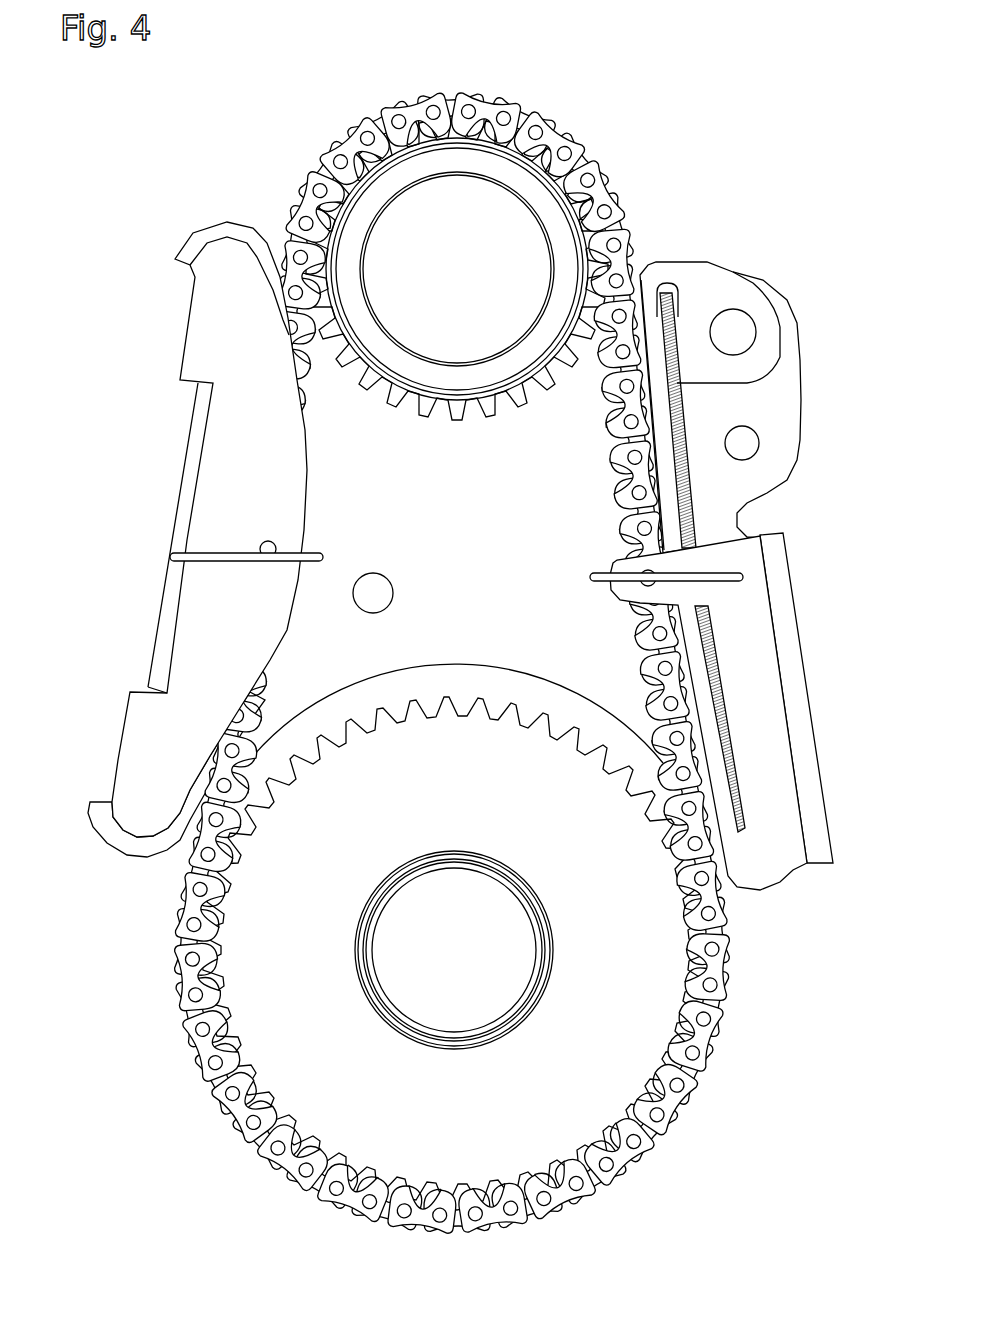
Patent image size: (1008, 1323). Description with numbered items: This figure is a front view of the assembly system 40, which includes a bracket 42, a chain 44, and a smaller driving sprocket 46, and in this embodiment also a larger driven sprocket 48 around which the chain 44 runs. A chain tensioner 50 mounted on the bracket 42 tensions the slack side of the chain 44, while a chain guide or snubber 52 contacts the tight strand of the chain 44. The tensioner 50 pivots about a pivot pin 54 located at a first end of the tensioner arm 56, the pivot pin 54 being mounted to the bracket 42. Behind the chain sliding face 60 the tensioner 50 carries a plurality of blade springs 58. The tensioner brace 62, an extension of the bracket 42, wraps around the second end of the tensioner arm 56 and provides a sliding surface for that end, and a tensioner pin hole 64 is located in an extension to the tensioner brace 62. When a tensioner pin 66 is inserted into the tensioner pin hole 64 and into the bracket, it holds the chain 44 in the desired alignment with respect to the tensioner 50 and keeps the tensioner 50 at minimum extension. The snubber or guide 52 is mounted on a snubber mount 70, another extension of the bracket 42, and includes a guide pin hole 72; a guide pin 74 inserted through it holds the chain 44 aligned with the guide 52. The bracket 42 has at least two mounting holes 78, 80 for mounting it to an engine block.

The assembly system 40 is at (690, 99).
The bracket 42 is at (523, 572).
The chain 44 is at (210, 1050).
The smaller driving sprocket 46 is at (360, 218).
The larger driven sprocket 48 is at (406, 812).
The chain tensioner 50 is at (710, 302).
The chain guide or snubber 52 is at (274, 496).
The pivot pin 54 is at (735, 335).
The tensioner arm 56 is at (697, 673).
The blade springs 58 is at (690, 490).
The chain sliding face 60 is at (655, 470).
The tensioner brace 62 is at (782, 776).
The tensioner pin hole 64 is at (656, 579).
The tensioner pin 66 is at (700, 580).
The snubber mount 70 is at (165, 650).
The guide pin hole 72 is at (262, 545).
The guide pin 74 is at (230, 551).
The mounting hole 78 is at (373, 593).
The mounting hole 80 is at (745, 443).